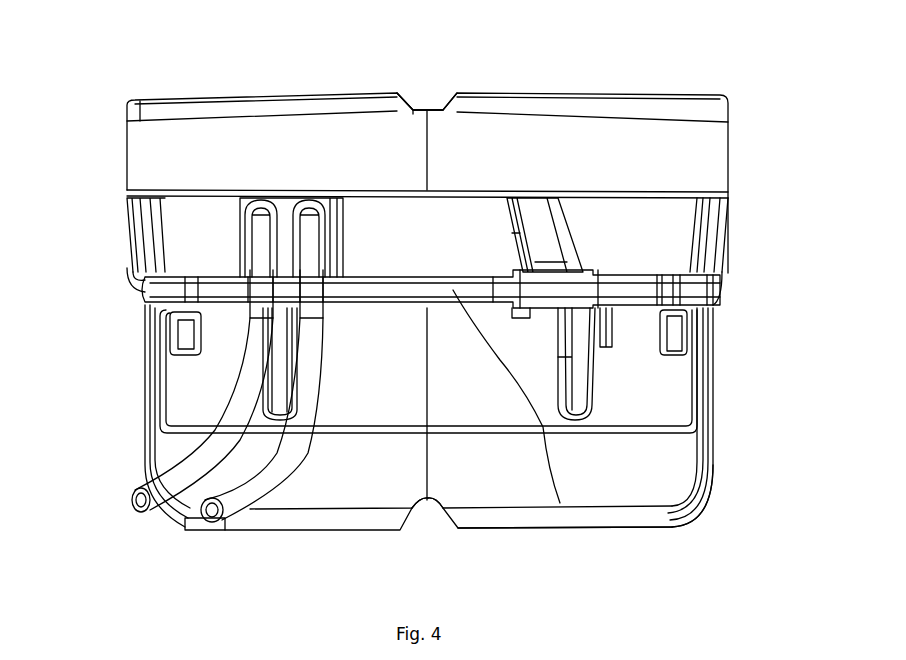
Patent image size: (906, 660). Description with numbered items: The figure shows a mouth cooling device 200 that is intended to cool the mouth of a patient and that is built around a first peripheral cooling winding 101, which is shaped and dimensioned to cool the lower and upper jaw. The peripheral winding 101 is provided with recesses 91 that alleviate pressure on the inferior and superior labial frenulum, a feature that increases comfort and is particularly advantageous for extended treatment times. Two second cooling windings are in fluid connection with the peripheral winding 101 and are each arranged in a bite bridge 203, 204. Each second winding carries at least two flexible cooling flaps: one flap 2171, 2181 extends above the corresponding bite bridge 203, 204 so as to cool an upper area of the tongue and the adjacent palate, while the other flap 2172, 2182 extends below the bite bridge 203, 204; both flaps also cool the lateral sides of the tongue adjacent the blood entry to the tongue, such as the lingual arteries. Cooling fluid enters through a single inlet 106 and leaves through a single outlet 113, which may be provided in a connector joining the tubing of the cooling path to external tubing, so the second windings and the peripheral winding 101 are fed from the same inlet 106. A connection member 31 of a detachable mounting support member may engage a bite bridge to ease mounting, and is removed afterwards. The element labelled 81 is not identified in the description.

The mouth cooler 200 is at (116, 92).
The recess 91 is at (425, 100).
The first peripheral cooling winding 101 is at (530, 130).
The flexible cooling flap 2181 is at (412, 163).
The outlet 113 is at (265, 225).
The inlet 106 is at (317, 245).
The flexible cooling flap 2171 is at (543, 225).
The bite bridge 203 is at (623, 297).
The flexible cooling flap 2172 is at (583, 375).
The bite bridge 204 is at (165, 340).
The flexible cooling flap 2182 is at (270, 382).
The connection member 31 is at (453, 290).
The base 81 is at (686, 516).